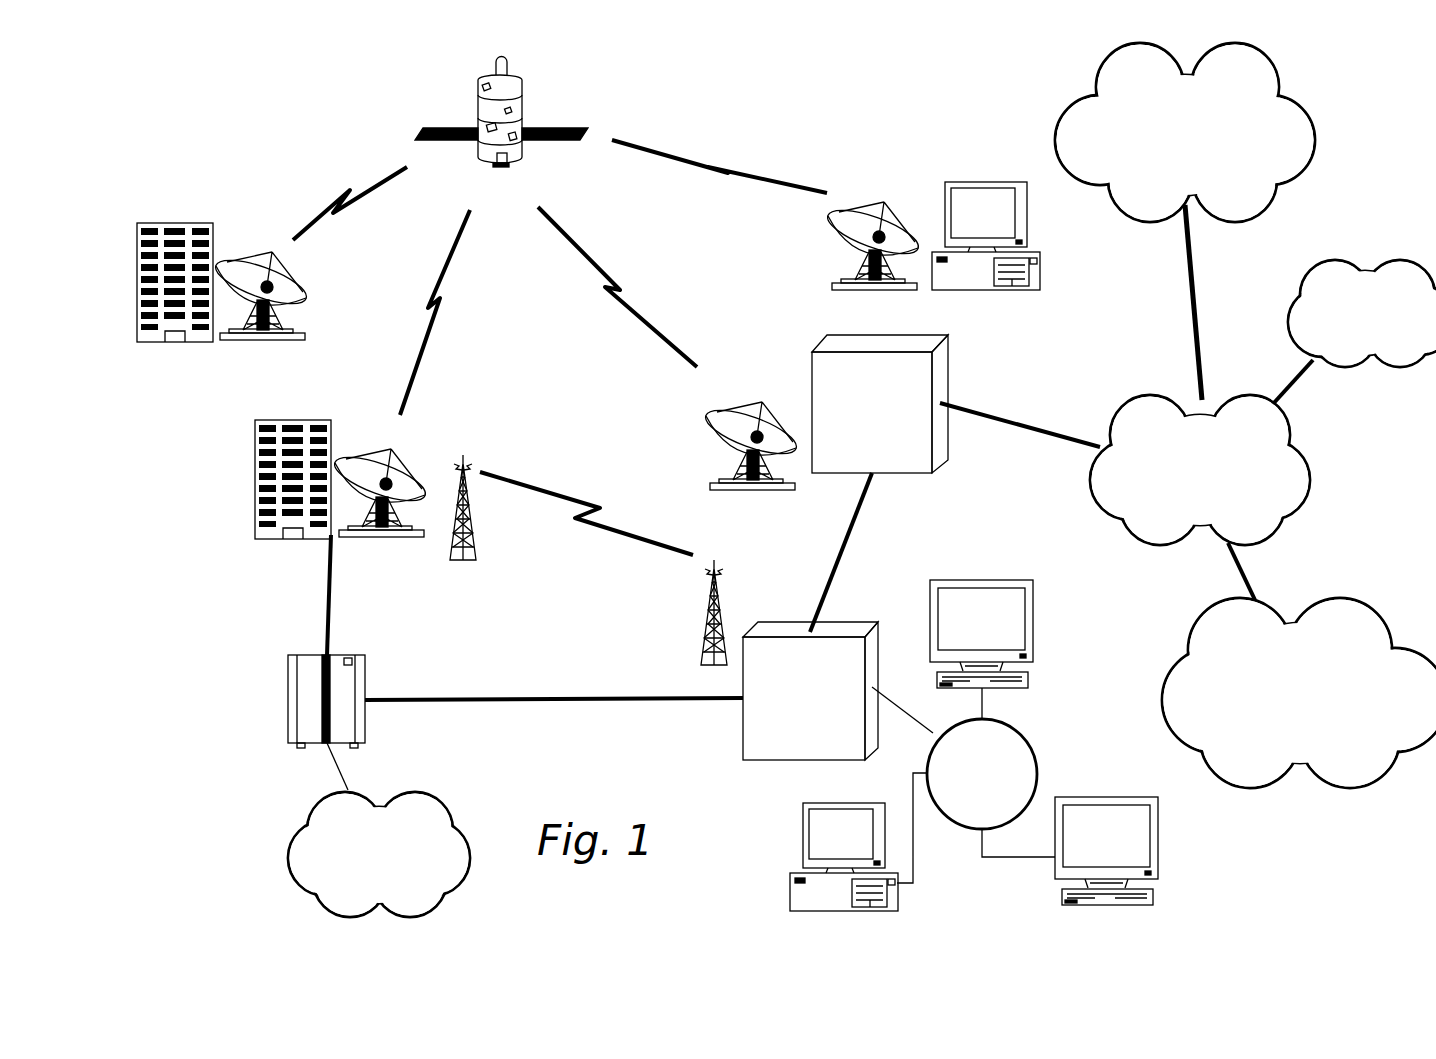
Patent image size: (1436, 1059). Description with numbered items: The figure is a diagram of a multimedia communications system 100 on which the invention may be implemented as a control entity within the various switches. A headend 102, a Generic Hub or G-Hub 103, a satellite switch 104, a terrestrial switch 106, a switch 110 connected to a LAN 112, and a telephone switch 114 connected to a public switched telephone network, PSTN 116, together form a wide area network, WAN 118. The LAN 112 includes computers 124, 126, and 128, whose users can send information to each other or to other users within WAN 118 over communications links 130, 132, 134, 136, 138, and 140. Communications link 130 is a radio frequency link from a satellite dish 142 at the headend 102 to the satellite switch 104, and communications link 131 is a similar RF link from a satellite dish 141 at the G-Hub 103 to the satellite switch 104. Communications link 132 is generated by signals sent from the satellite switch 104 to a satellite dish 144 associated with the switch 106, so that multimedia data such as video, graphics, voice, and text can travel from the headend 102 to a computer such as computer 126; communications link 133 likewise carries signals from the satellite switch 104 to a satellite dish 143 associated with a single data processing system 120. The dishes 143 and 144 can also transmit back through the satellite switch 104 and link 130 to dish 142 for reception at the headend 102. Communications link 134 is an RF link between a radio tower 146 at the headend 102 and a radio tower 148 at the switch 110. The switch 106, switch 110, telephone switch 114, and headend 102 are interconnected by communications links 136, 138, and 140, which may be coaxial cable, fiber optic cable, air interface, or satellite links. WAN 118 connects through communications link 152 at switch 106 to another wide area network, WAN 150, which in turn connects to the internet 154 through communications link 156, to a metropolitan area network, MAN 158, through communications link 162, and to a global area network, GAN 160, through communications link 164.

The communications system 100 is at (650, 105).
The headend 102 is at (255, 452).
The Generic Hub (G-Hub) 103 is at (184, 223).
The satellite switch 104 is at (418, 134).
The switch 106 is at (846, 437).
The switch 110 is at (778, 724).
The LAN 112 is at (956, 805).
The telephone switch 114 is at (288, 680).
The public switch telephone network (PSTN) 116 is at (352, 879).
The wide area network (WAN) 118 is at (515, 393).
The data processing system 120 is at (998, 182).
The computer 124 is at (790, 898).
The computer 126 is at (1034, 613).
The computer 128 is at (1160, 840).
The communications link 130 is at (440, 302).
The communications link 131 is at (352, 205).
The communications link 132 is at (640, 324).
The communications link 133 is at (756, 180).
The communications link 134 is at (586, 520).
The communications link 136 is at (838, 548).
The communications link 138 is at (553, 700).
The communications link 140 is at (328, 607).
The satellite dish 141 is at (270, 342).
The satellite dish 142 is at (389, 537).
The satellite dish 143 is at (830, 248).
The satellite dish 144 is at (706, 440).
The radio tower 146 is at (472, 540).
The radio tower 148 is at (706, 615).
The wide area network (WAN) 150 is at (1226, 493).
The communications link 152 is at (1010, 426).
The internet 154 is at (1212, 157).
The communications link 156 is at (1192, 322).
The metropolitan area network (MAN) 158 is at (1391, 338).
The global area network (GAN) 160 is at (1272, 718).
The communications link 162 is at (1303, 378).
The communications link 164 is at (1240, 578).